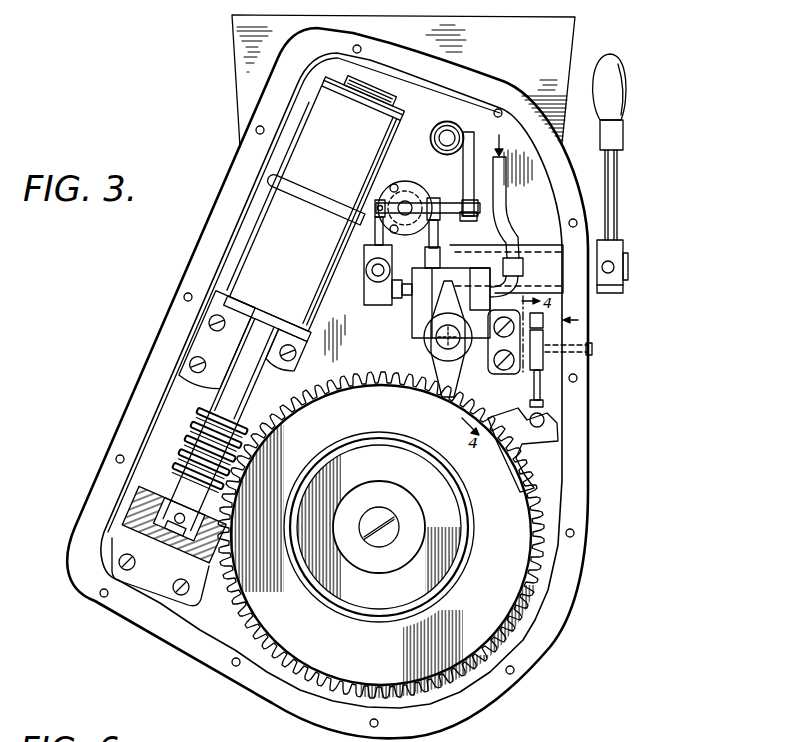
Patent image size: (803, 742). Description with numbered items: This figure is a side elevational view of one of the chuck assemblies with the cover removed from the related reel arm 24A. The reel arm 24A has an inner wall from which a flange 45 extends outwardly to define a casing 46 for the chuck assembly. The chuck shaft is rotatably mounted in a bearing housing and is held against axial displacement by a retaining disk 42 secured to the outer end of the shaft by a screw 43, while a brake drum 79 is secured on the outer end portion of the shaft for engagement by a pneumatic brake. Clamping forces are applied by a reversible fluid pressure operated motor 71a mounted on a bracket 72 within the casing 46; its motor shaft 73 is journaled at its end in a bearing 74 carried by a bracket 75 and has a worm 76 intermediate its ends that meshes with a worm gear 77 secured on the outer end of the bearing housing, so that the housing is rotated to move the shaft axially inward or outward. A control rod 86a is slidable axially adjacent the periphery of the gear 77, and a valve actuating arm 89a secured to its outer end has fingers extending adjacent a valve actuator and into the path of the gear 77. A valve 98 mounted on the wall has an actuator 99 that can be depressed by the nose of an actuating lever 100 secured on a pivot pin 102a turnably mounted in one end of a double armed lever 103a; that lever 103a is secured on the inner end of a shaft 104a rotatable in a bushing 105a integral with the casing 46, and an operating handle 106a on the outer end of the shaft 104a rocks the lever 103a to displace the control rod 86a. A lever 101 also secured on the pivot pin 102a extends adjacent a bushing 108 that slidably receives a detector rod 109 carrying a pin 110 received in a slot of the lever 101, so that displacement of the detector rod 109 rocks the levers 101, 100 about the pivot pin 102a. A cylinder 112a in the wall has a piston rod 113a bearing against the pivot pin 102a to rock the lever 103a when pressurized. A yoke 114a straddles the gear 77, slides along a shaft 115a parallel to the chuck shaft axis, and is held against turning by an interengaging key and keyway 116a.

The reel arm 24A is at (560, 62).
The flange 45 is at (153, 617).
The casing 46 is at (436, 117).
The worm gear 77 is at (243, 617).
The brake drum 79 is at (308, 577).
The retaining disk 42 is at (378, 565).
The screw 43 is at (388, 537).
The actuating lever 100 is at (349, 234).
The fluid pressure operated motor 71a is at (291, 263).
The bracket 72 is at (203, 338).
The motor shaft 73 is at (230, 393).
The worm 76 is at (197, 425).
The bearing 74 is at (133, 513).
The bracket 75 is at (137, 573).
The bushing 108 is at (441, 131).
The detector rod 109 is at (443, 142).
The pin 110 is at (489, 113).
The lever 101 is at (462, 164).
The pivot pin 102a is at (463, 190).
The cylinder 112a is at (384, 195).
The piston rod 113a is at (375, 200).
The valve 98 is at (364, 302).
The actuator 99 is at (364, 271).
The double armed lever 103a is at (497, 240).
The bushing 105a is at (537, 245).
The control rod 86a is at (410, 330).
The valve actuating arm 89a is at (412, 372).
The key and keyway 116a is at (553, 415).
The shaft 115a is at (557, 430).
The yoke 114a is at (557, 460).
The shaft 104a is at (624, 246).
The operating handle 106a is at (690, 113).